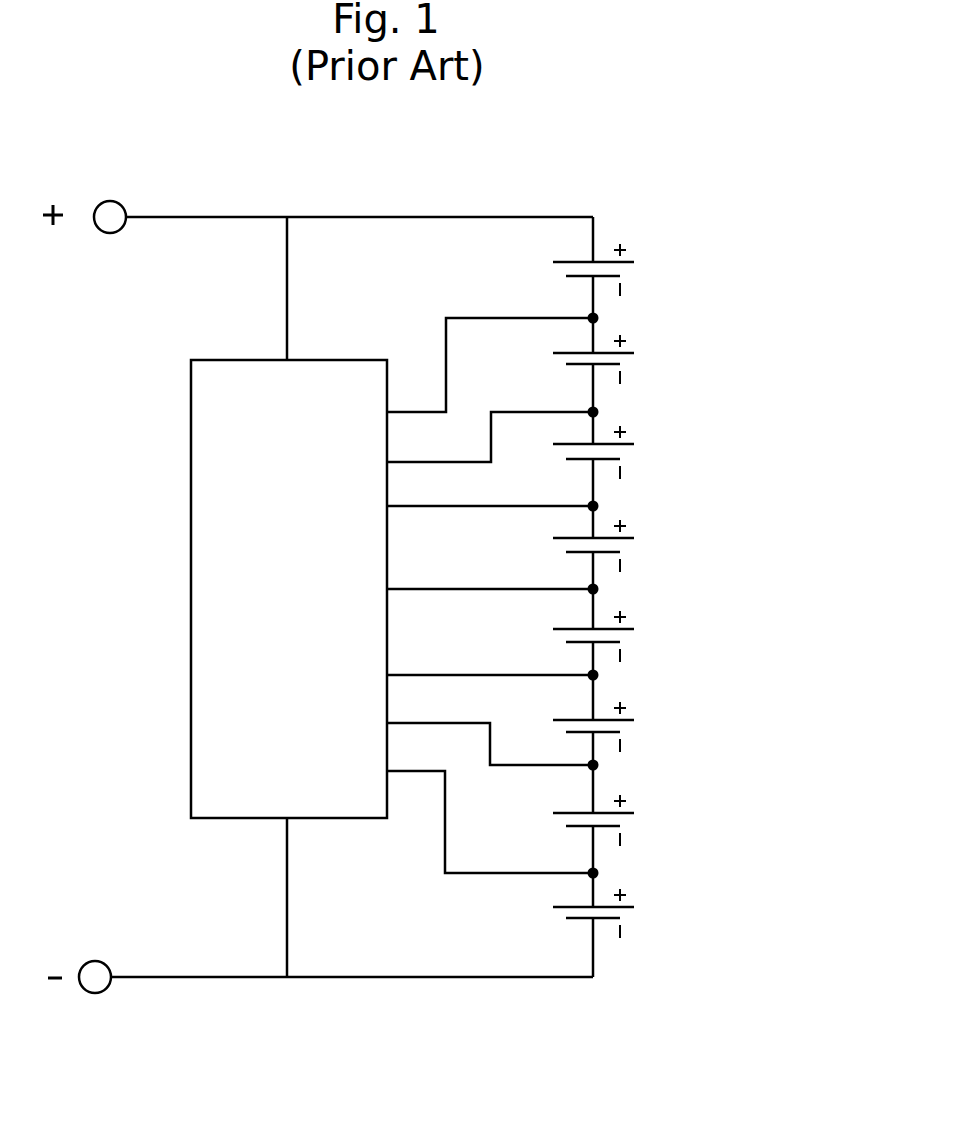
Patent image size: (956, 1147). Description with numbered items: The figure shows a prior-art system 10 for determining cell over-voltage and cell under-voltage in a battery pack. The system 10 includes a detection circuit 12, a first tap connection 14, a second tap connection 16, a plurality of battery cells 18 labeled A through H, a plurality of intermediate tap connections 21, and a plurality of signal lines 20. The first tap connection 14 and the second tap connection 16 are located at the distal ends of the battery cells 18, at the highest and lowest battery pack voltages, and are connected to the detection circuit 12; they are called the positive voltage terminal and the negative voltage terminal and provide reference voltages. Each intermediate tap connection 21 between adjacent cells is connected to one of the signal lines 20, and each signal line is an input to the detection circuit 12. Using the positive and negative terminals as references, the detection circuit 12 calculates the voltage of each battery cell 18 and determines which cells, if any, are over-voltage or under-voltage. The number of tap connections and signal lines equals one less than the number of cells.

The system 10 is at (656, 85).
The detection circuit 12 is at (183, 392).
The first tap connection 14 is at (213, 206).
The second tap connection 16 is at (165, 968).
The plurality of battery cells 18 is at (800, 249).
The plurality of signal lines 20 is at (467, 864).
The plurality of intermediate tap connections 21 is at (612, 866).